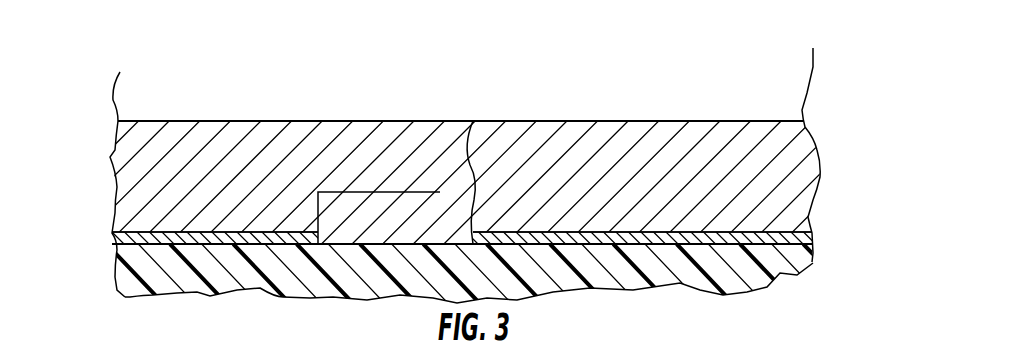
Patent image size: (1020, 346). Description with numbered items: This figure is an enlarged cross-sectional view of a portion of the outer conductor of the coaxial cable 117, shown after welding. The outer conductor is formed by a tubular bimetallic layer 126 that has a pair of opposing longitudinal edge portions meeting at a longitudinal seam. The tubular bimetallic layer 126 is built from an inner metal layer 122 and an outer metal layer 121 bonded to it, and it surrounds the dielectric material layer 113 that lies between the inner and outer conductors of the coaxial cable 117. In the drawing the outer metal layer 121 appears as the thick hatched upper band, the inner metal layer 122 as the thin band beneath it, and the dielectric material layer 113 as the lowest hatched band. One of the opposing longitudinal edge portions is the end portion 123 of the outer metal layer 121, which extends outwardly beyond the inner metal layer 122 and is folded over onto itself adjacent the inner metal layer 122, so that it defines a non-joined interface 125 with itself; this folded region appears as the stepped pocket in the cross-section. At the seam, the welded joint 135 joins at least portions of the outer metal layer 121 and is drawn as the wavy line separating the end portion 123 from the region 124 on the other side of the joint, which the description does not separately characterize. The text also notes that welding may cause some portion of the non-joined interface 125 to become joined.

The coaxial cable 117 is at (185, 85).
The outer metal layer 121 is at (800, 150).
The inner metal layer 122 is at (808, 236).
The dielectric material layer 113 is at (806, 258).
The end portion of the outer metal layer 123 is at (405, 121).
The second portion of layer top surface 124 is at (518, 121).
The non-joined interface 125 is at (358, 192).
The tubular bimetallic layer 126 is at (138, 191).
The welded joint 135 is at (476, 121).